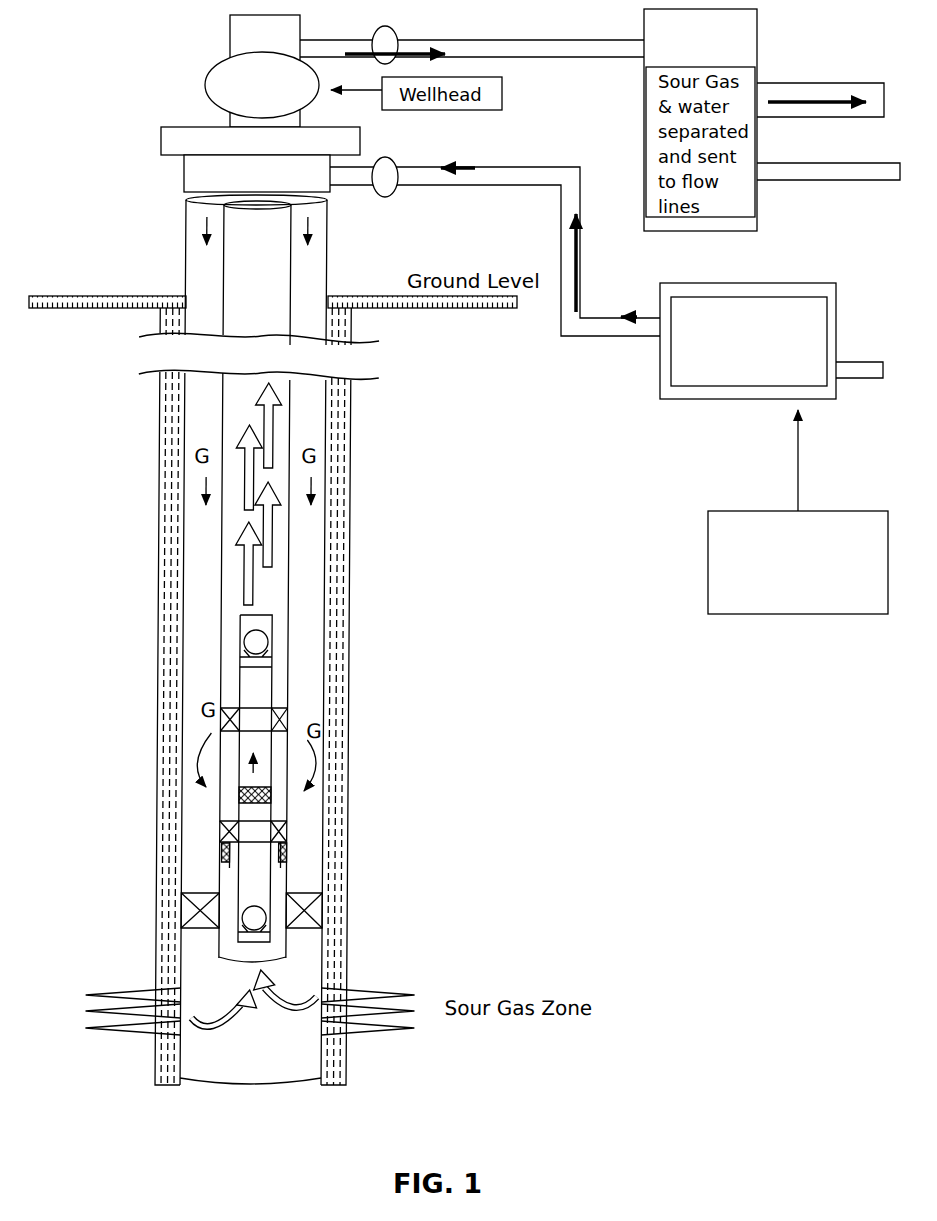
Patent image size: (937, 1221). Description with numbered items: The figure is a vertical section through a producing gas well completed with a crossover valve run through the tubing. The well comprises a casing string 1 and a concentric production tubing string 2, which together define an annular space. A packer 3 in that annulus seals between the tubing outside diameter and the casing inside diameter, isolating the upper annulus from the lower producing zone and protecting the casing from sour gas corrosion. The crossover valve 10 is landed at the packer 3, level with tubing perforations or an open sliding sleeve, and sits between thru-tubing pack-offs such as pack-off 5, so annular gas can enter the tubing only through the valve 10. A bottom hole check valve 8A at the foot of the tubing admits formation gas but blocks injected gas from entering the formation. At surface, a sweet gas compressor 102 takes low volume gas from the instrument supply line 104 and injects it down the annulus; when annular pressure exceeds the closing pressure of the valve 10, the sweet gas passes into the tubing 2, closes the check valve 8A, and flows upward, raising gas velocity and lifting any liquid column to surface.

The casing string 1 is at (343, 496).
The production tubing string 2 is at (303, 560).
The packer 3 is at (341, 916).
The thru-tubing pack-off 5 is at (232, 826).
The bottom hole check valve 8A is at (286, 935).
The crossover valve 10 is at (244, 800).
The sweet gas compressor 102 is at (668, 380).
The instrument supply line 104 is at (850, 511).